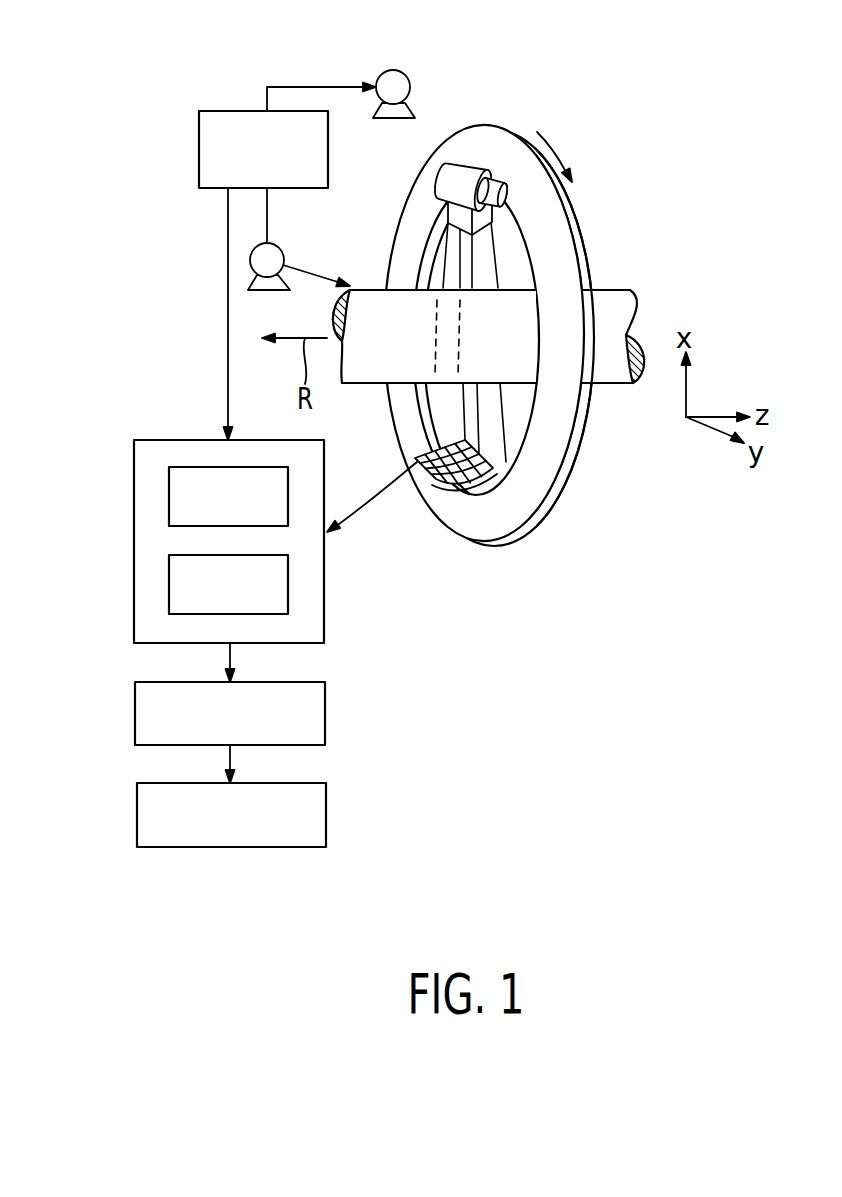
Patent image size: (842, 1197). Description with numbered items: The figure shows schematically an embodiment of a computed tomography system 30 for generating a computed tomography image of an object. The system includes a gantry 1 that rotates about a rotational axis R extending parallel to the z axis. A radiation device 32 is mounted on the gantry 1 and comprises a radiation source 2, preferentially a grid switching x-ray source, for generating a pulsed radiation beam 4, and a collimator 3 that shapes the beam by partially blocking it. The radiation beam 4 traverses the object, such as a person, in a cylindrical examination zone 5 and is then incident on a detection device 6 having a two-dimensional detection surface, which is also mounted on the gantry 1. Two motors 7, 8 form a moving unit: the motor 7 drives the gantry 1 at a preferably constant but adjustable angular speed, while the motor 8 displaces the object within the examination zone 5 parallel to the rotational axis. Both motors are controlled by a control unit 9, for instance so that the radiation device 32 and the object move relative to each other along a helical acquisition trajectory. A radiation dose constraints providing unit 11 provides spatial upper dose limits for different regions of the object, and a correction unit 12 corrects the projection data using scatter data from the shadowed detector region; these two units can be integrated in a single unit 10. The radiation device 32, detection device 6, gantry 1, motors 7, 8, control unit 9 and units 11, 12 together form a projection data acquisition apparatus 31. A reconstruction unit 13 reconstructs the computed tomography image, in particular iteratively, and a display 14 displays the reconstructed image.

The gantry 1 is at (537, 473).
The radiation source 2 is at (460, 170).
The collimator 3 is at (483, 220).
The pulsed radiation beam 4 is at (478, 430).
The examination zone 5 is at (372, 290).
The detection device 6 is at (447, 495).
The motor 7 is at (403, 69).
The motor 8 is at (285, 253).
The control unit 9 is at (214, 111).
The single unit 10 is at (327, 627).
The radiation dose constraints providing unit 11 is at (169, 497).
The correction unit 12 is at (169, 584).
The reconstruction unit 13 is at (327, 713).
The display 14 is at (327, 817).
The computed tomography system 30 is at (177, 915).
The projection data acquisition apparatus 31 is at (138, 112).
The radiation device 32 is at (484, 158).